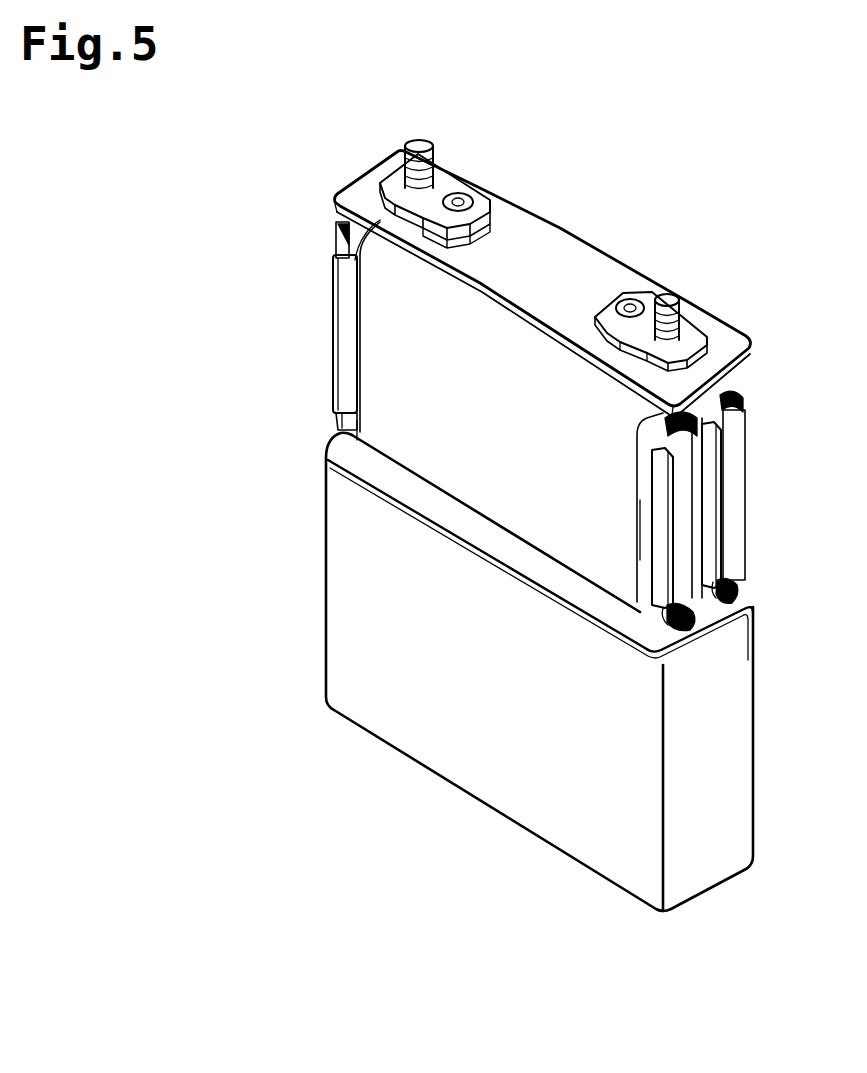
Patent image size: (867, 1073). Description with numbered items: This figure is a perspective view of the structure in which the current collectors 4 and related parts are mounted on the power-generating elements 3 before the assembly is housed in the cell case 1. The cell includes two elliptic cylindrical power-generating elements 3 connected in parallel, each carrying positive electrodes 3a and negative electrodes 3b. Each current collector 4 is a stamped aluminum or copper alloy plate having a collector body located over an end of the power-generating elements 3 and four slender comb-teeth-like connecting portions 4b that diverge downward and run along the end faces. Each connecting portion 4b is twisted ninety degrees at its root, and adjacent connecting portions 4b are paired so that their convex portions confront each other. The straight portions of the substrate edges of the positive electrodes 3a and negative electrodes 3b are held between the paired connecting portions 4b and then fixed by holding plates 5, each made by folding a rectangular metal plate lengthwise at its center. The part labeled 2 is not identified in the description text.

The cell case 1 is at (473, 757).
The bus bar plate 2 is at (590, 243).
The power-generating element 3 is at (503, 490).
The positive electrode 3a is at (637, 510).
The negative electrode 3b is at (446, 415).
The current collector 4 is at (338, 232).
The connecting portion 4b is at (345, 425).
The holding plate 5 is at (343, 345).